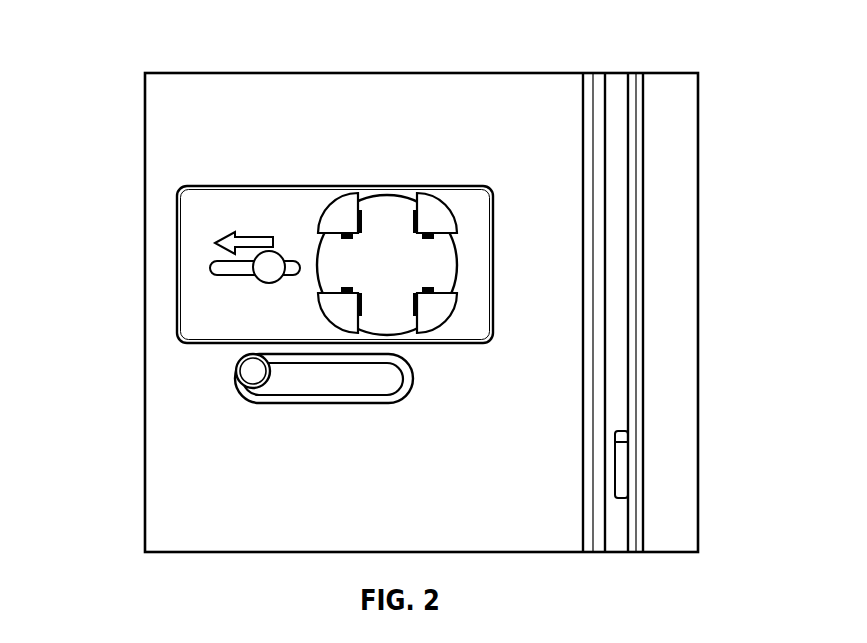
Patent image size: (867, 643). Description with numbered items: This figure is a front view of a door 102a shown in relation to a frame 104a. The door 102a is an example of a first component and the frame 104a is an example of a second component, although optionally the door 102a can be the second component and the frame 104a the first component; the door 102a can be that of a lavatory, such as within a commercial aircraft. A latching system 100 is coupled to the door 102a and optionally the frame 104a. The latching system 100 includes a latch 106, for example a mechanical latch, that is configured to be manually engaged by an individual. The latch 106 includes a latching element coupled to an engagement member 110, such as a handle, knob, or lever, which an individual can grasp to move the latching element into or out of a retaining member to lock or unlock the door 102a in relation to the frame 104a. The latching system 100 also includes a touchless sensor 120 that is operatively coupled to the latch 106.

The latching system 100 is at (168, 236).
The door 102a is at (175, 160).
The frame 104a is at (678, 200).
The latch 106 is at (322, 412).
The engagement member 110 is at (246, 375).
The touchless sensor 120 is at (440, 215).